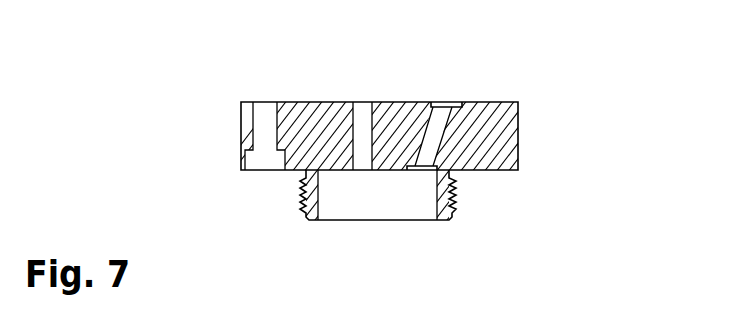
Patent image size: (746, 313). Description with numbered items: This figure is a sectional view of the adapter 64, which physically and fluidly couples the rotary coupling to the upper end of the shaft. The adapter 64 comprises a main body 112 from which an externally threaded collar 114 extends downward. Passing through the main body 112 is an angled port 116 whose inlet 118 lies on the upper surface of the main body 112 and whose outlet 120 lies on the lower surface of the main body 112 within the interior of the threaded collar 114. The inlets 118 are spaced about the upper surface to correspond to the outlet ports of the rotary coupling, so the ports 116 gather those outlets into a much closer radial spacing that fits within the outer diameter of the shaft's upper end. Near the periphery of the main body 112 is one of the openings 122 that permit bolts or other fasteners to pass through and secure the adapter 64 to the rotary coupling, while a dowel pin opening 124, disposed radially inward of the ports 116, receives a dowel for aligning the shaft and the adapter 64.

The adapter 64 is at (520, 118).
The main body 112 is at (240, 112).
The externally threaded collar 114 is at (301, 202).
The angled port 116 is at (435, 145).
The inlet 118 is at (447, 104).
The outlet 120 is at (418, 170).
The opening 122 is at (262, 115).
The dowel pin opening 124 is at (365, 104).